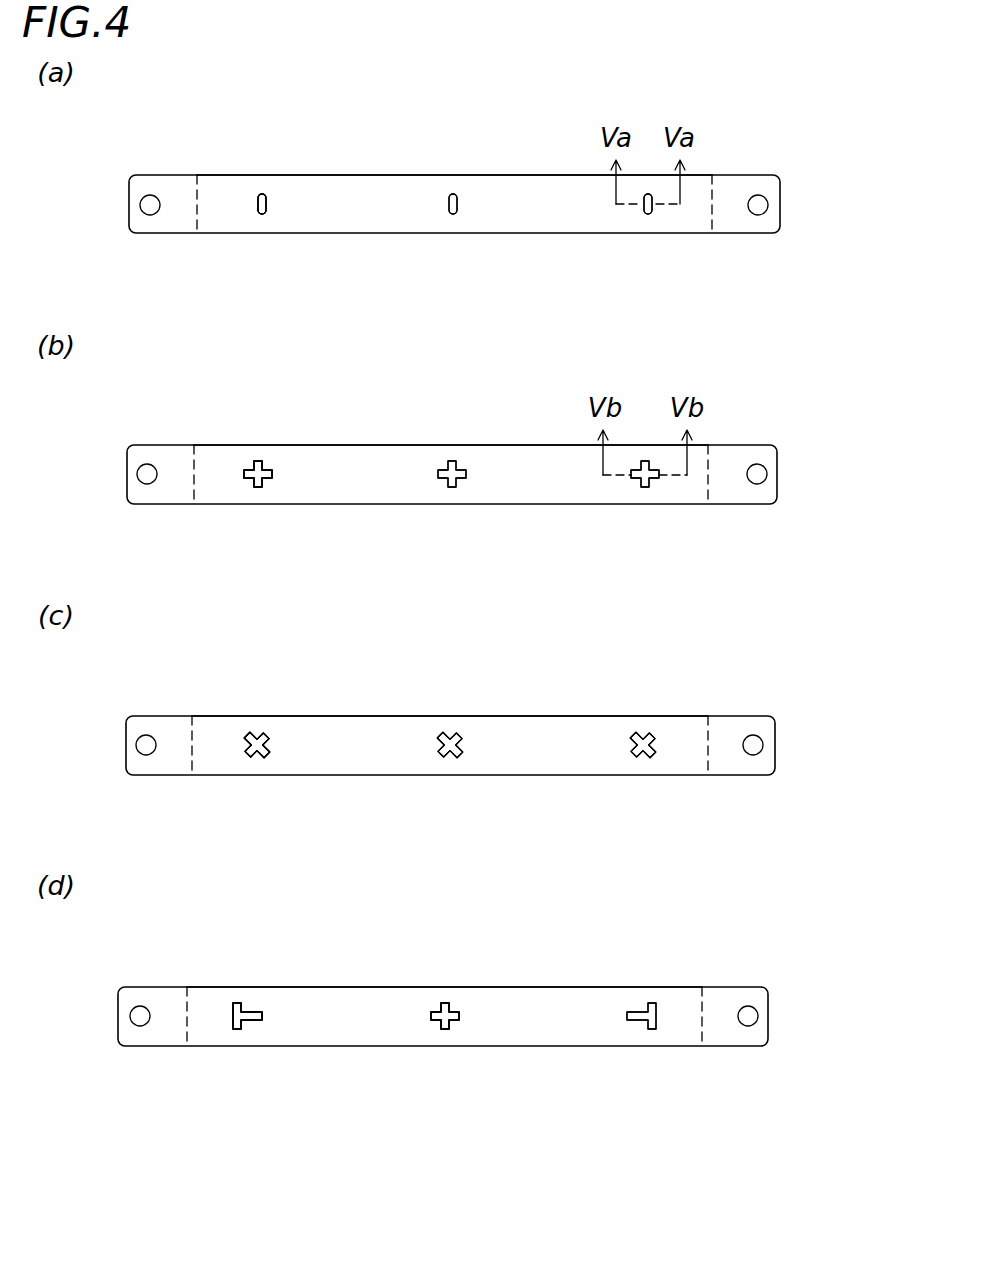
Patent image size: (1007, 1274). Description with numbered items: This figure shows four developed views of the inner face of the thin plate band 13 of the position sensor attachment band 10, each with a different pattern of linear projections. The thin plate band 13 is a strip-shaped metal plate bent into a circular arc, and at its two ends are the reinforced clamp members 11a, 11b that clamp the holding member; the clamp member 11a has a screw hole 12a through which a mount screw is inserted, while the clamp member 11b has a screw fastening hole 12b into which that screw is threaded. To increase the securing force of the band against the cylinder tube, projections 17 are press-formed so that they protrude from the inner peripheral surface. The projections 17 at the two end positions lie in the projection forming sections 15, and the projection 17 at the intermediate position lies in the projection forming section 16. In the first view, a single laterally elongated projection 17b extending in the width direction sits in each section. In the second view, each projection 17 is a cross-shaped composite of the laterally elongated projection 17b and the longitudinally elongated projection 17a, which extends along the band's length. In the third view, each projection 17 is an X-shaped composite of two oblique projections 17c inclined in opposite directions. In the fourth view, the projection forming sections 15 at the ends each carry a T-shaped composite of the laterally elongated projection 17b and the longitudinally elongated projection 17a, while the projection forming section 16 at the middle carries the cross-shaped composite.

The position sensor attachment band 10 is at (532, 173).
The clamp member 11a is at (738, 232).
The clamp member 11b is at (162, 218).
The screw hole 12a is at (758, 205).
The screw fastening hole 12b is at (150, 205).
The thin plate band 13 is at (371, 173).
The projection forming section 15 is at (262, 190).
The projection forming section 16 is at (455, 188).
The projection 17 is at (262, 215).
The longitudinally elongated projection 17a is at (265, 478).
The laterally elongated projection 17b is at (257, 462).
The oblique projection 17c is at (248, 736).